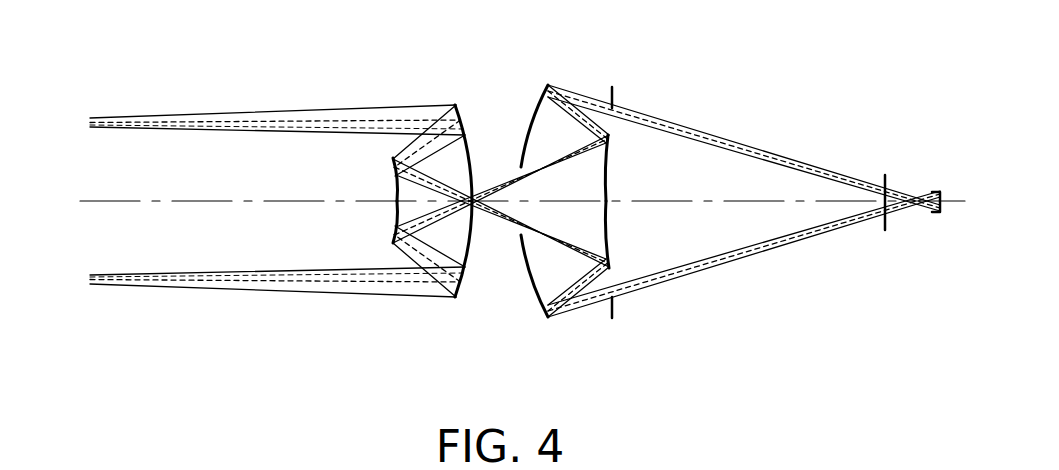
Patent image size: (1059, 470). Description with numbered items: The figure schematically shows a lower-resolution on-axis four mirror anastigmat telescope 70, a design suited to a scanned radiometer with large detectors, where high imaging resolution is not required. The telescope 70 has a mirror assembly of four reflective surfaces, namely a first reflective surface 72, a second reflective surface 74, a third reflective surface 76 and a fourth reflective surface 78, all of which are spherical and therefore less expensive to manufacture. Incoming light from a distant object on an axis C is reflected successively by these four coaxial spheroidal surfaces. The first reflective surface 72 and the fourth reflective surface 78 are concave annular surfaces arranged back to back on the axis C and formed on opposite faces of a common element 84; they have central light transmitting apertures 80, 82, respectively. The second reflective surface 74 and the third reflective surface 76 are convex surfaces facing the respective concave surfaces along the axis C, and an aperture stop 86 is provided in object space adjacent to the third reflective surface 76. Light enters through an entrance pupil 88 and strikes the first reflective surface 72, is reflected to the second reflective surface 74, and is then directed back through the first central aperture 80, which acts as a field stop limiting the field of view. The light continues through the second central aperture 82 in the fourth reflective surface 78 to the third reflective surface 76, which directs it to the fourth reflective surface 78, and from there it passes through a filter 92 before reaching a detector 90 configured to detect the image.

The on-axis four mirror anastigmat telescope 70 is at (686, 345).
The first reflective surface 72 is at (470, 168).
The second reflective surface 74 is at (398, 223).
The third reflective surface 76 is at (607, 237).
The fourth reflective surface 78 is at (530, 123).
The central light transmitting aperture 80 is at (475, 214).
The central light transmitting aperture 82 is at (518, 168).
The common element 84 is at (483, 117).
The aperture stop 86 is at (612, 107).
The entrance pupil 88 is at (115, 283).
The detector 90 is at (942, 193).
The filter 92 is at (888, 232).
The axis C is at (233, 203).